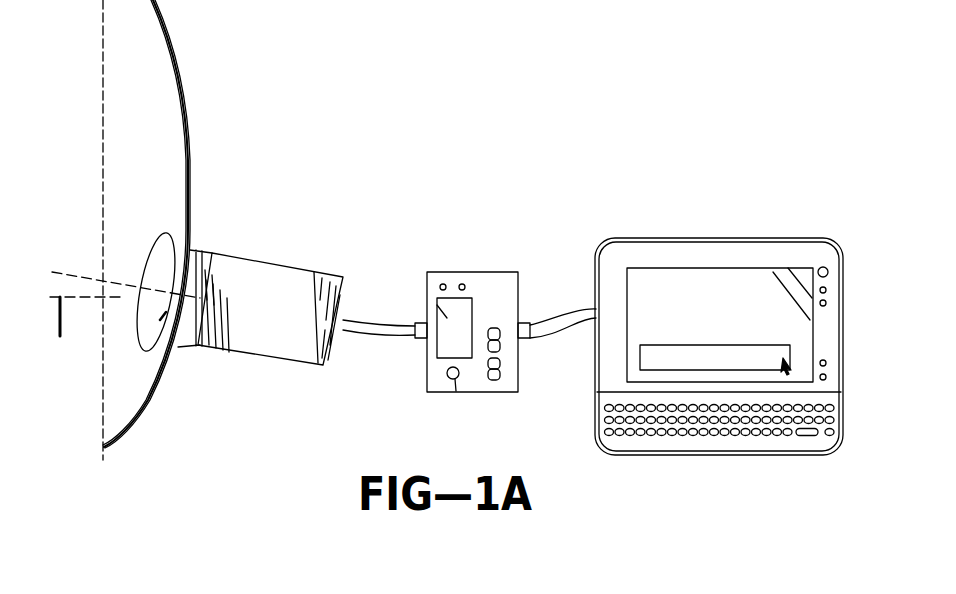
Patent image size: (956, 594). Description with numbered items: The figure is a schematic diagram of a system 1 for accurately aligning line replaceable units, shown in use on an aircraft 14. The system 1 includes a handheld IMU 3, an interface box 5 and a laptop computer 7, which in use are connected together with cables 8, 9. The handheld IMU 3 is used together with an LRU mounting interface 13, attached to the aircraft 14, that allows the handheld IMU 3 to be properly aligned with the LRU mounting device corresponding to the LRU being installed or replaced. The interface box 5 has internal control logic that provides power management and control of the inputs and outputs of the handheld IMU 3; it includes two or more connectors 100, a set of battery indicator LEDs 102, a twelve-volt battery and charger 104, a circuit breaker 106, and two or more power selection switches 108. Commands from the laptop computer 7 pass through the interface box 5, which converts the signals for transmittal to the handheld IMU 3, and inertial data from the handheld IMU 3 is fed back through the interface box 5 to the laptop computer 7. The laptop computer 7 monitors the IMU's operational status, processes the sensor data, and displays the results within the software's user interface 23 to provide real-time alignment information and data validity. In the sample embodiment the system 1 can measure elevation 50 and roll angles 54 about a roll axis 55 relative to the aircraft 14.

The system 1 is at (636, 130).
The handheld IMU 3 is at (270, 257).
The interface box 5 is at (480, 271).
The laptop computer 7 is at (690, 238).
The cable 8 is at (402, 331).
The cable 9 is at (533, 333).
The LRU mounting interface 13 is at (200, 242).
The aircraft 14 is at (183, 72).
The user interface 23 is at (765, 288).
The elevation 50 is at (62, 263).
The roll angle 54 is at (165, 236).
The roll axis 55 is at (135, 283).
The connectors 100 is at (420, 341).
The battery indicator LEDs 102 is at (462, 283).
The 12V battery and charger 104 is at (437, 303).
The circuit breaker 106 is at (453, 381).
The power selection switches 108 is at (500, 343).